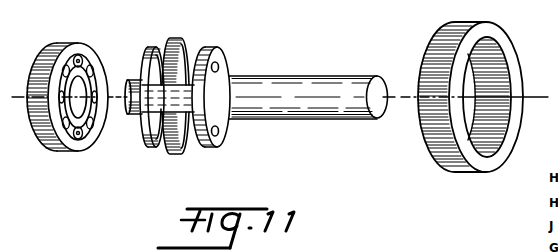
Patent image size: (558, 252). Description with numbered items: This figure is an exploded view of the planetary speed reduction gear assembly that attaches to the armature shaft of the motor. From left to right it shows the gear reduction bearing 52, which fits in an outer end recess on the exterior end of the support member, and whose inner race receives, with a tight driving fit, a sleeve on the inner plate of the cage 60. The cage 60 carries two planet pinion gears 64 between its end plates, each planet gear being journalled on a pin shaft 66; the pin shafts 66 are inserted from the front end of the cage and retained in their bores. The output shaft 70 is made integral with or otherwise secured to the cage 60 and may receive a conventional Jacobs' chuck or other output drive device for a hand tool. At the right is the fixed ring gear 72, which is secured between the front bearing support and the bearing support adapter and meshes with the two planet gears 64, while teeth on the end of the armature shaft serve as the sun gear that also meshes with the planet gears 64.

The gear reduction bearing 52 is at (77, 63).
The cage 60 is at (143, 67).
The planet pinion gears 64 is at (186, 45).
The pin shaft 66 is at (219, 64).
The output shaft 70 is at (292, 83).
The fixed ring gear 72 is at (500, 58).